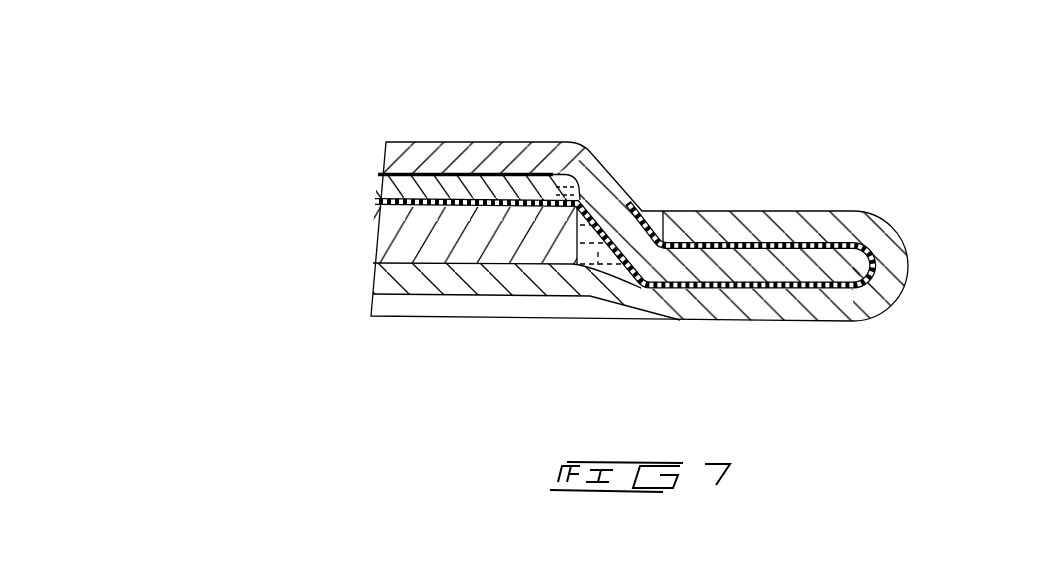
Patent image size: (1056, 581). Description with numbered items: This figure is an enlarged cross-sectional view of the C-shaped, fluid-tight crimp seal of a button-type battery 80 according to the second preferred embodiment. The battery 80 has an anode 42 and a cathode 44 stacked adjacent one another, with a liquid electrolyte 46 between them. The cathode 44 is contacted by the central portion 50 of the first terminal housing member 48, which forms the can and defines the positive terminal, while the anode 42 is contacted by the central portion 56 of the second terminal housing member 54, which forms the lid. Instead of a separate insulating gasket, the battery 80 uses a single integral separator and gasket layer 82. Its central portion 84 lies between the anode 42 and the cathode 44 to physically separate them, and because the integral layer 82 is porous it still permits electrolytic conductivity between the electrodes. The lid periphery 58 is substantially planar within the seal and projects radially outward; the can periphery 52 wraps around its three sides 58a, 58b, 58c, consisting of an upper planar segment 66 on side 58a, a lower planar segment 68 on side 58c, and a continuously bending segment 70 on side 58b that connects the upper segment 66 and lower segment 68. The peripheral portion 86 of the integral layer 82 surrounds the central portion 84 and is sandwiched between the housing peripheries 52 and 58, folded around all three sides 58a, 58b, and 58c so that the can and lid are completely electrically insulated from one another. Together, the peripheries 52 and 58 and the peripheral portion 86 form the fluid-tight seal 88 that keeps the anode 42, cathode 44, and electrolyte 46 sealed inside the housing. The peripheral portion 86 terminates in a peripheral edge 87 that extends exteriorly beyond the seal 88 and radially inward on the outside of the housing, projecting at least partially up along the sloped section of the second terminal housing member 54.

The button-type battery 80 is at (717, 92).
The first terminal housing member periphery 52 is at (867, 313).
The second terminal housing member 54 is at (522, 136).
The central portion of second terminal housing member 56 is at (420, 150).
The anode 42 is at (378, 175).
The integral separator and gasket layer 82 is at (556, 184).
The central portion of integral layer 84 is at (372, 202).
The cathode 44 is at (382, 237).
The liquid electrolyte 46 is at (598, 266).
The central portion of first terminal housing member 50 is at (382, 282).
The first terminal housing member 48 is at (630, 333).
The second terminal housing member periphery 58 is at (740, 246).
The first side of lid periphery 58a is at (815, 248).
The second side of lid periphery 58b is at (865, 280).
The third side of lid periphery 58c is at (818, 293).
The peripheral edge 87 is at (640, 208).
The upper planar segment 66 is at (757, 220).
The lower planar segment 68 is at (777, 310).
The peripheral portion of integral layer 86 is at (733, 291).
The continuously bending segment 70 is at (907, 257).
The fluid-tight seal 88 is at (919, 208).